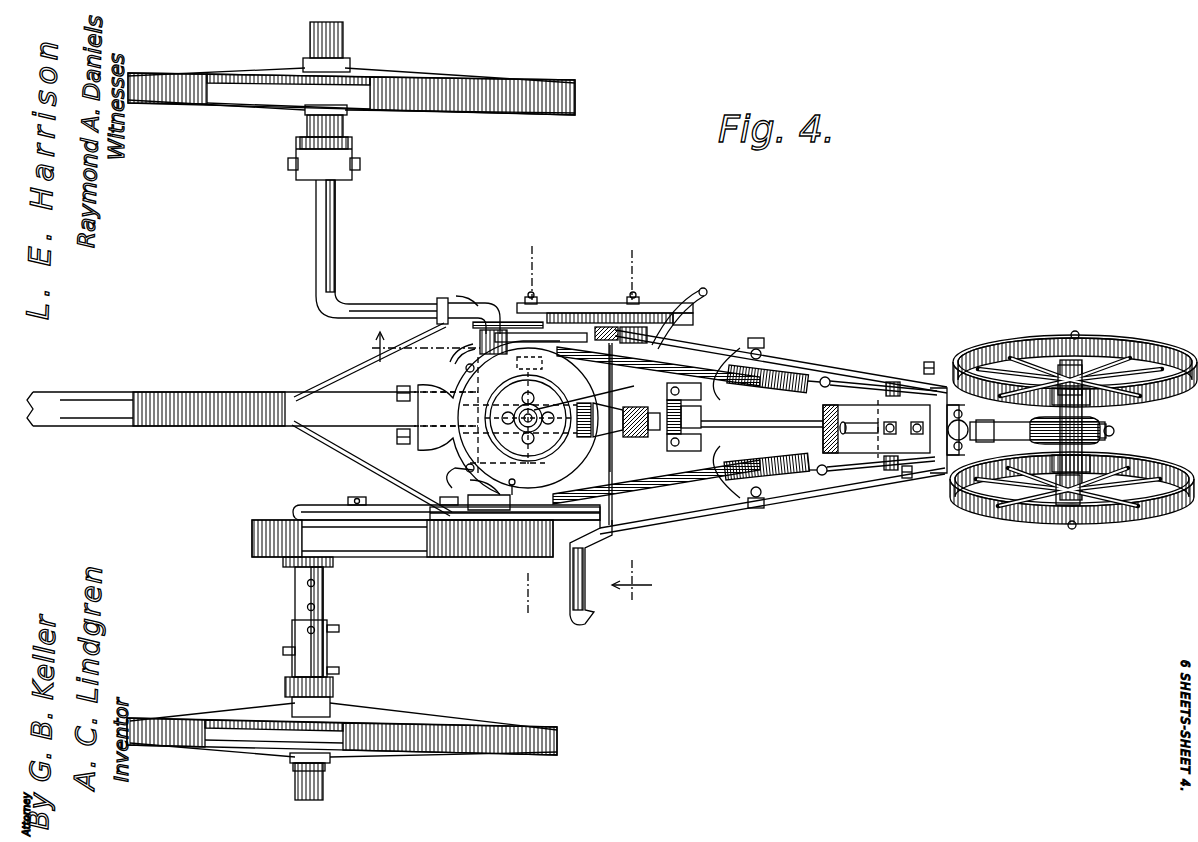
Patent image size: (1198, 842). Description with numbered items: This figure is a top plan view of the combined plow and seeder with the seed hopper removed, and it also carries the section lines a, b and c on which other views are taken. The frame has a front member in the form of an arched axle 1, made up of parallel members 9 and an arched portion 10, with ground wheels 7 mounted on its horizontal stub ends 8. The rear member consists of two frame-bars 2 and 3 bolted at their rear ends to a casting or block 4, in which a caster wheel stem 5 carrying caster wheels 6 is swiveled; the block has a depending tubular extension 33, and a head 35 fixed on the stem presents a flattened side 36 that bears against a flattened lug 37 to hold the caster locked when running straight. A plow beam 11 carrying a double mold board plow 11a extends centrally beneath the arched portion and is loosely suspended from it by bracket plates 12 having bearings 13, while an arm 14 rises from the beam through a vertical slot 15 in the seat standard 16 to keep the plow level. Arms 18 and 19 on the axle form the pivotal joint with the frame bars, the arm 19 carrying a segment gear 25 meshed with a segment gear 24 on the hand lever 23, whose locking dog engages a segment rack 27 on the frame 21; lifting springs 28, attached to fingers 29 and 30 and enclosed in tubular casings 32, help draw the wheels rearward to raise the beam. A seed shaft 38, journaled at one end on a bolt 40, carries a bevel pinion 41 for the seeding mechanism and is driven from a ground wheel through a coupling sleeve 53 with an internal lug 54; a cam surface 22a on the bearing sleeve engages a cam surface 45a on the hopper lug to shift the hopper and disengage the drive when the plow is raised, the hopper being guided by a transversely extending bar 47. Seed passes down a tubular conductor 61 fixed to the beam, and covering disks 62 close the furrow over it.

The arched axle 1 is at (324, 320).
The frame-bar 2 is at (792, 500).
The frame-bar 3 is at (732, 350).
The casting or block 4 is at (940, 474).
The caster wheel stem 5 is at (996, 423).
The caster wheels 6 is at (1132, 454).
The ground wheels 7 is at (480, 84).
The horizontal stub ends 8 is at (337, 232).
The parallel members 9 is at (421, 304).
The arched portion 10 is at (452, 462).
The plow beam 11 is at (190, 427).
The double mold board plow 11a is at (330, 440).
The bracket plates 12 is at (412, 384).
The bearings 13 is at (470, 300).
The arm 14 is at (756, 428).
The vertical slot 15 is at (862, 434).
The seat standard 16 is at (846, 404).
The arm 18 is at (500, 521).
The arm 19 is at (496, 328).
The frame 21 is at (546, 322).
The cam surface 22a is at (542, 538).
The hand lever 23 is at (646, 312).
The segment gear 24 is at (608, 318).
The segment gear 25 is at (580, 303).
The segment rack 27 is at (700, 286).
The lifting springs 28 is at (782, 374).
The finger 29 is at (528, 418).
The finger 30 is at (584, 440).
The tubular casings 32 is at (700, 352).
The tubular extension 33 is at (968, 436).
The head 35 is at (994, 344).
The flattened side 36 is at (936, 386).
The flattened lug 37 is at (906, 480).
The seed shaft 38 is at (595, 392).
The bolt 40 is at (540, 292).
The bevel pinion 41 is at (462, 472).
The cam surface 45a is at (507, 481).
The transversely extending bar 47 is at (622, 522).
The coupling sleeve 53 is at (332, 660).
The lug 54 is at (328, 622).
The tubular conductor 61 is at (660, 434).
The covering disks 62 is at (762, 336).
The section line a— a is at (416, 347).
The section line b— b is at (529, 430).
The section line c— c is at (632, 423).